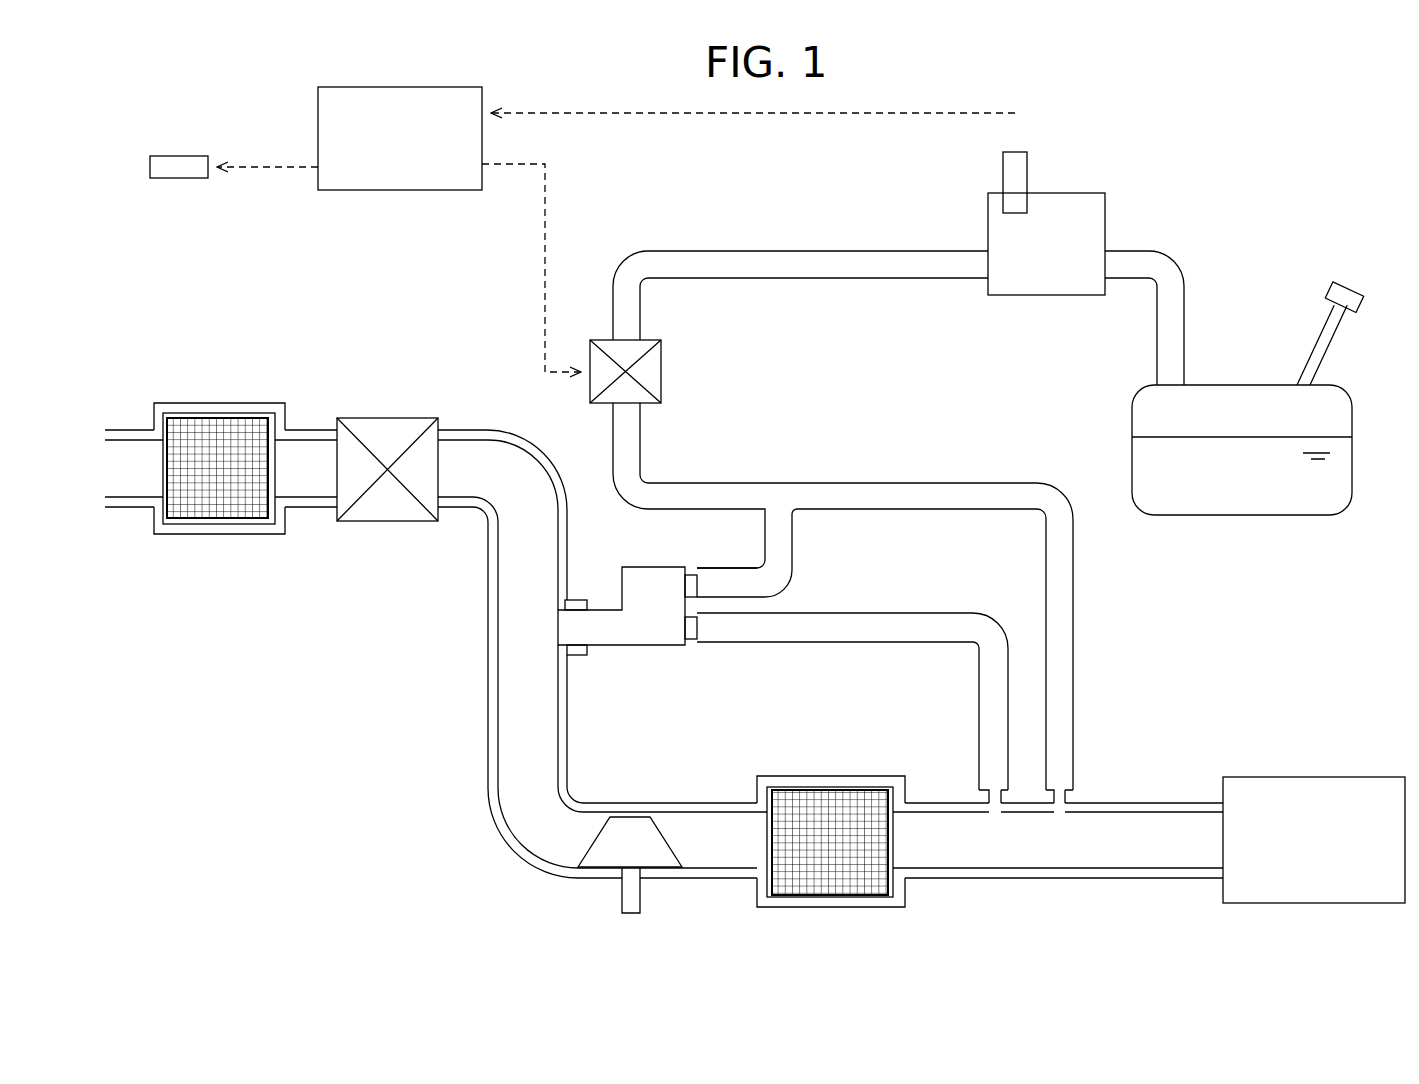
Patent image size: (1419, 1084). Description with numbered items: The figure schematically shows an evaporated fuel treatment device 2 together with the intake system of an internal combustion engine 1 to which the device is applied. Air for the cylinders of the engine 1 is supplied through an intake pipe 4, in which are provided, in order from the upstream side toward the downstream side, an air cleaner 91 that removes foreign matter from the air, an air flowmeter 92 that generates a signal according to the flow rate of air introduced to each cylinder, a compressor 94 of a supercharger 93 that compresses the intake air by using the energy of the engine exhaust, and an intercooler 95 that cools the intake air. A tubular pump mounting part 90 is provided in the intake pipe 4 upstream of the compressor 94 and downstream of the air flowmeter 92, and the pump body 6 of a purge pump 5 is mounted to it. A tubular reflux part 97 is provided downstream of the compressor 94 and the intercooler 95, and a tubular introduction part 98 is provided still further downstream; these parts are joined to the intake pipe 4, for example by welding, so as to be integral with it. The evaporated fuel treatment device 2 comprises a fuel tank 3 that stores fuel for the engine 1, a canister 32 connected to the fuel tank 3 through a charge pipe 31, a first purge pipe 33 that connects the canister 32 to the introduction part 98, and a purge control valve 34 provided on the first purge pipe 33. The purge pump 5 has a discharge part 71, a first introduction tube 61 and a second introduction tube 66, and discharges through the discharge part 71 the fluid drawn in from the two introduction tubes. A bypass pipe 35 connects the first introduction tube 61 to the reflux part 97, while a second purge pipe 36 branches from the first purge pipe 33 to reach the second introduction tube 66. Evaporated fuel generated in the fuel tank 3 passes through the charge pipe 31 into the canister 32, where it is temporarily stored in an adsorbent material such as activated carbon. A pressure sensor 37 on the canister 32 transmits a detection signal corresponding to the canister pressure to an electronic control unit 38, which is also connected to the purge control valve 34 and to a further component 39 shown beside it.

The engine 1 is at (1311, 786).
The evaporated fuel treatment device 2 is at (1183, 153).
The fuel tank 3 is at (1229, 392).
The intake pipe 4 is at (1151, 802).
The purge pump 5 is at (666, 675).
The pump body 6 is at (631, 652).
The charge pipe 31 is at (1171, 262).
The canister 32 is at (1084, 197).
The first purge pipe 33 is at (958, 482).
The purge control valve 34 is at (652, 376).
The bypass pipe 35 is at (879, 615).
The second purge pipe 36 is at (785, 543).
The pressure sensor 37 is at (1016, 154).
The electronic control unit 38 is at (318, 118).
The indicator 39 is at (150, 170).
The first introduction tube 61 is at (690, 640).
The second introduction tube 66 is at (688, 576).
The discharge part 71 is at (560, 627).
The pump mounting part 90 is at (579, 601).
The air cleaner 91 is at (236, 415).
The air flowmeter 92 is at (411, 419).
The supercharger 93 is at (665, 902).
The compressor 94 is at (640, 818).
The intercooler 95 is at (862, 794).
The reflux part 97 is at (996, 812).
The introduction part 98 is at (1062, 812).